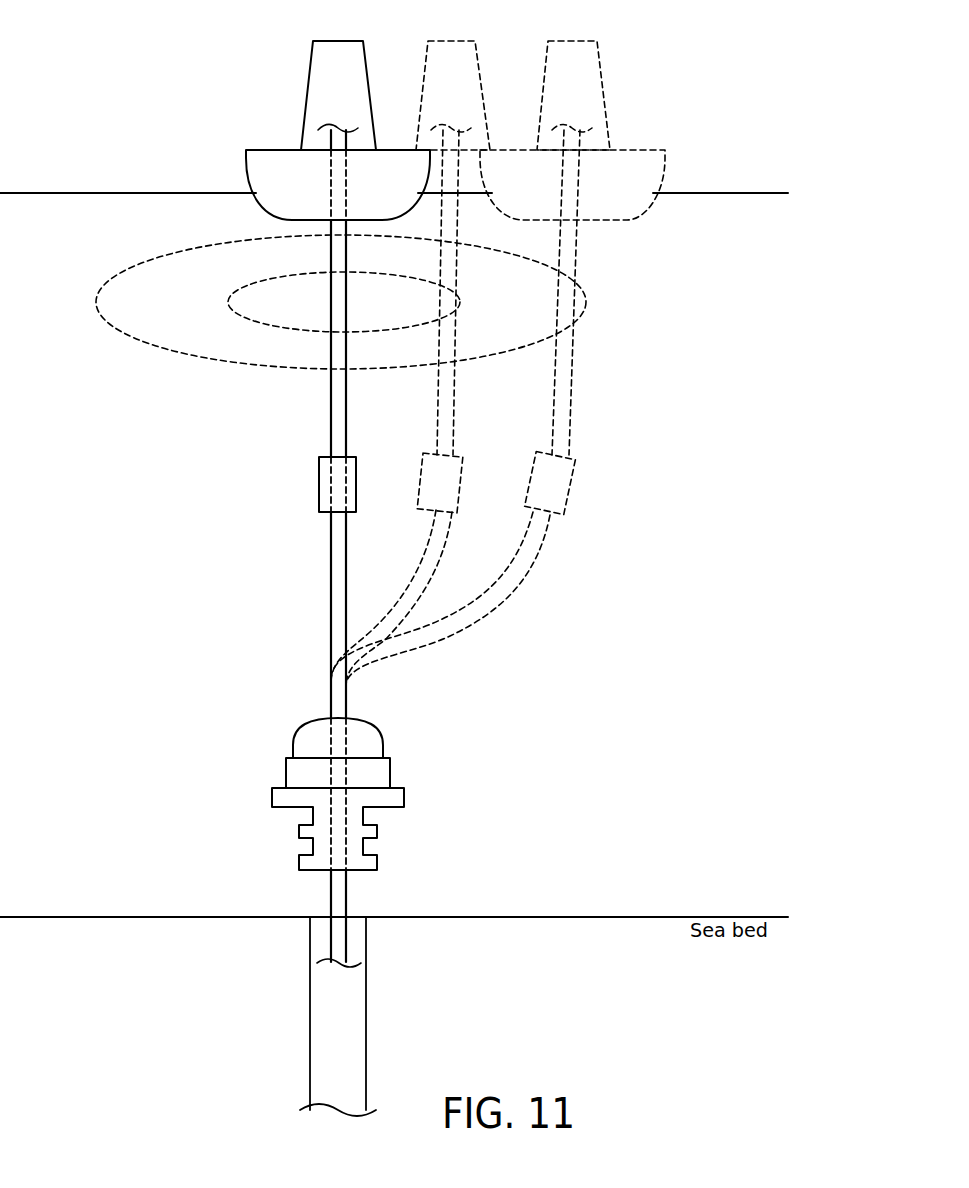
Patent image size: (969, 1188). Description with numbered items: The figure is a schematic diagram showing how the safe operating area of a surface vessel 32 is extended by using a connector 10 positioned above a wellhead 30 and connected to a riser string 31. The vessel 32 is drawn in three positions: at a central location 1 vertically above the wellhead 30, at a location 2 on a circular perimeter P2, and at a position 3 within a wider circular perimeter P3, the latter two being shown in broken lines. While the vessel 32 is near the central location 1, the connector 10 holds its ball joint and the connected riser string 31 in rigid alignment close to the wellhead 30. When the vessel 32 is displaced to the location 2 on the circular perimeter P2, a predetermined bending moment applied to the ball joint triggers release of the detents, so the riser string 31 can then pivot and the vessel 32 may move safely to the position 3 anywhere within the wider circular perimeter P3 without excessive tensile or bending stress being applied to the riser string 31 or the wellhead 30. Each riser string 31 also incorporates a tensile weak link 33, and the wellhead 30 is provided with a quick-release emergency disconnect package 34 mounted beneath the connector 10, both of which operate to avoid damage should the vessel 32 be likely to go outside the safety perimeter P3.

The central location 1 is at (345, 34).
The location on circular perimeter P2 2 is at (461, 34).
The position within wider circular perimeter P3 3 is at (586, 34).
The surface vessel 32 is at (432, 115).
The riser string 31 is at (337, 575).
The tensile weak link 33 is at (319, 486).
The circular perimeter P2 is at (245, 322).
The wider circular perimeter P3 is at (588, 300).
The connector 10 is at (364, 742).
The quick-release emergency disconnect package 34 is at (380, 778).
The wellhead 30 is at (367, 833).